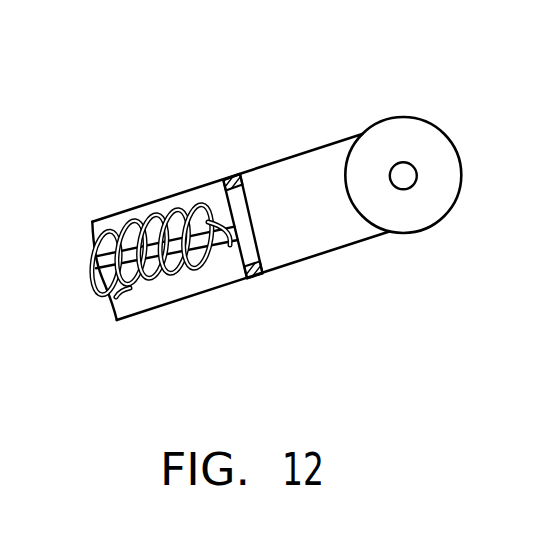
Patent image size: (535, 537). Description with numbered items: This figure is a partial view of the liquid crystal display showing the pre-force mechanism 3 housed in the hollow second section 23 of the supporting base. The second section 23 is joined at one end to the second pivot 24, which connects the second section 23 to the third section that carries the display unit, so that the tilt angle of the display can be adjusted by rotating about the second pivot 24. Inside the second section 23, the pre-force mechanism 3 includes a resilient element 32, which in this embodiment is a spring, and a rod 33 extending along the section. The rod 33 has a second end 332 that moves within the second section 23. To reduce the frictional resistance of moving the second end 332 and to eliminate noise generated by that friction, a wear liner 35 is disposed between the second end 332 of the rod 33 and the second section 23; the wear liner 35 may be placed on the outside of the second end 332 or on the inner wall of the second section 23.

The pre-force mechanism 3 is at (138, 113).
The second section 23 is at (155, 311).
The second pivot 24 is at (397, 117).
The resilient element 32 is at (153, 222).
The rod 33 is at (189, 174).
The second end 332 is at (249, 210).
The wear liner 35 is at (225, 178).